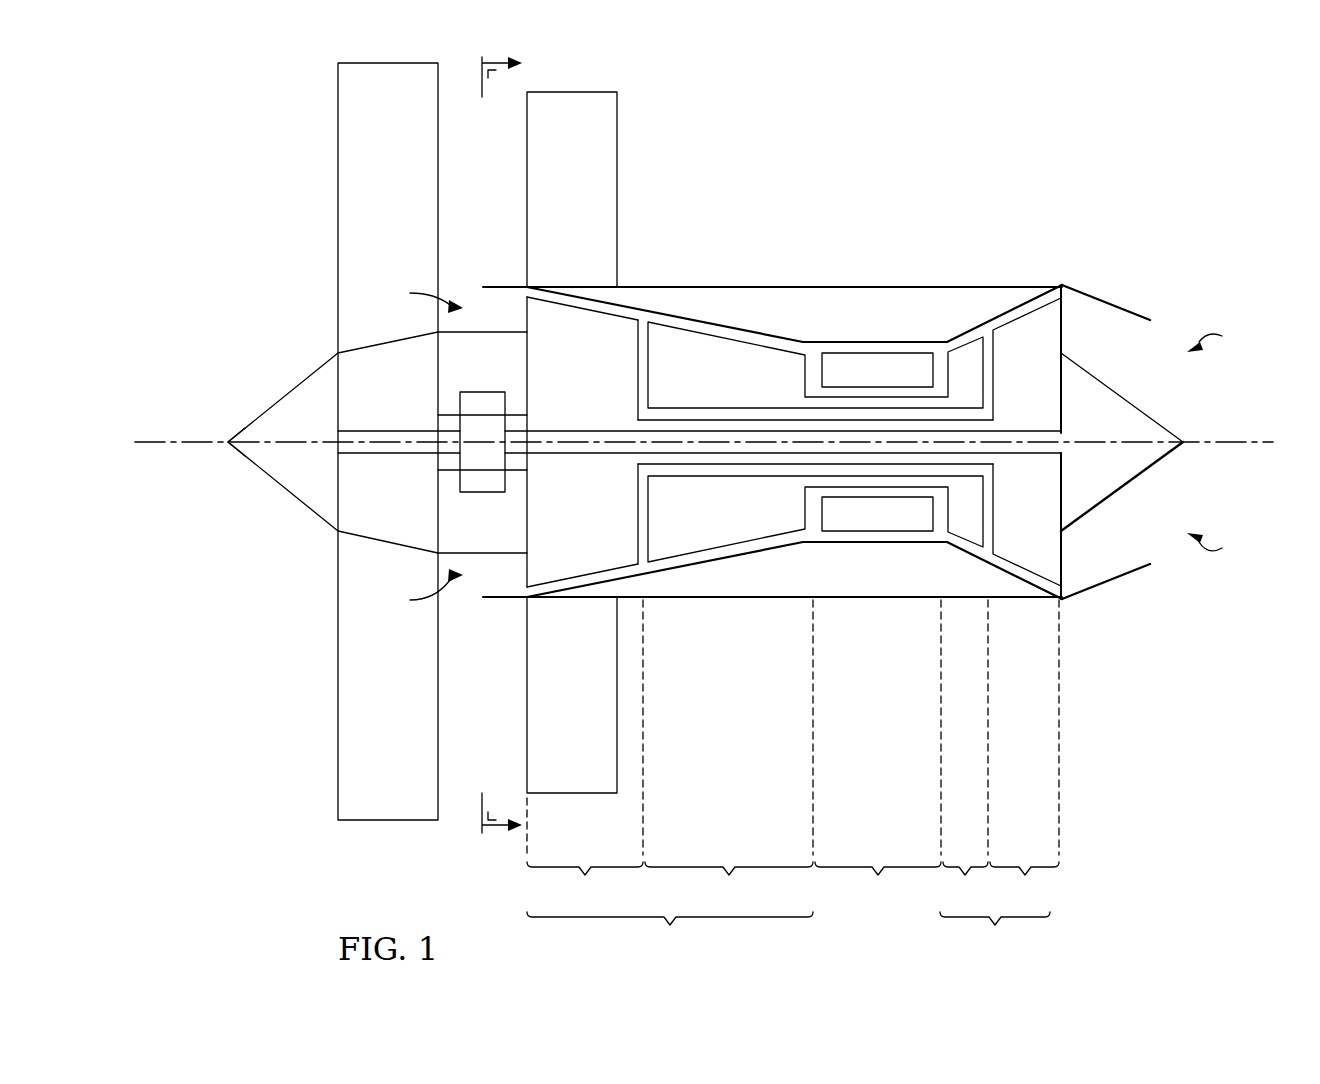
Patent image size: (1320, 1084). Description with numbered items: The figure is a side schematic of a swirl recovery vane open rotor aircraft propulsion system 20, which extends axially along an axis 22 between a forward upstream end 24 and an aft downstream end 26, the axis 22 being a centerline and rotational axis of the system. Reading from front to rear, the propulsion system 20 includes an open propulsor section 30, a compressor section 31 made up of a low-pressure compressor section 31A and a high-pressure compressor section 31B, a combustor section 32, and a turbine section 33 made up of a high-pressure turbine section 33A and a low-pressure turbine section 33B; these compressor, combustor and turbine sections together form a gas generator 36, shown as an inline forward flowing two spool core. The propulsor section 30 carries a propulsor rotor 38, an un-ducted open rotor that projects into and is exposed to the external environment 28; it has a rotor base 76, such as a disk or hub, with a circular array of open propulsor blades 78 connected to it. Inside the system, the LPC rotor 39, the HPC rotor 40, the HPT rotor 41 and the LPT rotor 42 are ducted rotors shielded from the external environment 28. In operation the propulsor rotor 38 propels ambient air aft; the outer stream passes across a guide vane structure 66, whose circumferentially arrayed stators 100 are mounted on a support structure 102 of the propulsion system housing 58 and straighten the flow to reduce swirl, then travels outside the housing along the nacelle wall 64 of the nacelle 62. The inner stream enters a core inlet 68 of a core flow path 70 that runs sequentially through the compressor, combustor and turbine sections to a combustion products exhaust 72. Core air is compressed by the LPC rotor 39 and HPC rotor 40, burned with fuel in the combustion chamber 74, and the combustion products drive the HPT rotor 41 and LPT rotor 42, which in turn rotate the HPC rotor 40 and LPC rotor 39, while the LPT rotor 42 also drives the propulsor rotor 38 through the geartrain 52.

The aircraft propulsion system 20 is at (181, 102).
The axis 22 is at (1243, 448).
The forward upstream end 24 is at (226, 440).
The aft downstream end 26 is at (1185, 438).
The external environment 28 is at (243, 253).
The propulsor section 30 is at (386, 483).
The compressor section 31 is at (670, 936).
The low-pressure compressor section 31A is at (585, 885).
The high-pressure compressor section 31B is at (729, 885).
The combustor section 32 is at (878, 885).
The turbine section 33 is at (995, 936).
The high-pressure turbine section 33A is at (966, 885).
The low-pressure turbine section 33B is at (1024, 885).
The gas generator 36 is at (862, 309).
The propulsor rotor 38 is at (334, 357).
The LPC rotor 39 is at (568, 371).
The HPC rotor 40 is at (712, 391).
The HPT rotor 41 is at (967, 355).
The LPT rotor 42 is at (1012, 387).
The geartrain 52 is at (485, 398).
The propulsion system housing 58 is at (971, 265).
The nacelle 62 is at (760, 288).
The nacelle wall 64 is at (693, 286).
The guide vane structure 66 is at (607, 417).
The core inlet 68 is at (419, 444).
The core flow path 70 is at (488, 289).
The combustion products exhaust 72 is at (1219, 442).
The combustion chamber 74 is at (915, 368).
The propulsor rotor base 76 is at (370, 381).
The propulsor blades 78 is at (373, 211).
The stators 100 is at (548, 211).
The support structure 102 is at (622, 298).